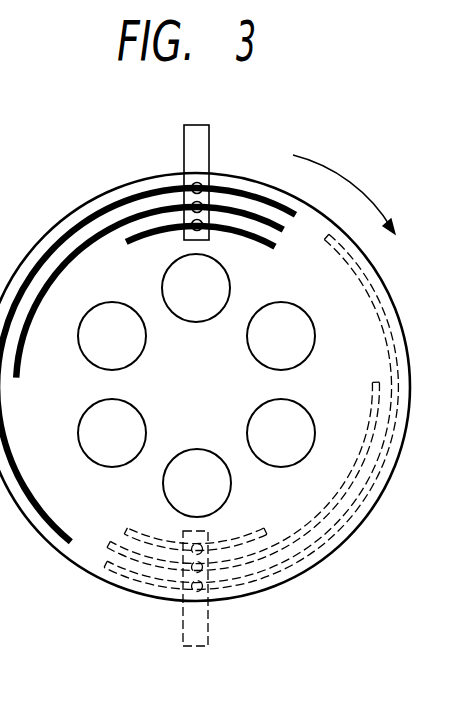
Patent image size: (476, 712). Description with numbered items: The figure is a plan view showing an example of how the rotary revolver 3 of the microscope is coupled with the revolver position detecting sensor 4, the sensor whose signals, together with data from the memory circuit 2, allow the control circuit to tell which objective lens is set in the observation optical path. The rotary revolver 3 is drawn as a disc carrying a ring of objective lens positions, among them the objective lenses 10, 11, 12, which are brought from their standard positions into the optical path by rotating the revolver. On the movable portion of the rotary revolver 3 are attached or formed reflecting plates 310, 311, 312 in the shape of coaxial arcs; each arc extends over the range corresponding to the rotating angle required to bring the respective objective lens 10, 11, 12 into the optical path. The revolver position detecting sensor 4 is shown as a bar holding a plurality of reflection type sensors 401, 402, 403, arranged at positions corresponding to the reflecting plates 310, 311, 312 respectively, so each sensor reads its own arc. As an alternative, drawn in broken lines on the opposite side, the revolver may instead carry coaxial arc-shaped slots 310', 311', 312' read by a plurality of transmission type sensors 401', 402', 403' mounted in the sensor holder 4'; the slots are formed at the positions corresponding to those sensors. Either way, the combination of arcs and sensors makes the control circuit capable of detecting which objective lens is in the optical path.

The memory circuit 2 is at (3, 162).
The rotary revolver 3 is at (355, 326).
The revolver position detecting sensor 4 is at (221, 166).
The objective lens 10 is at (208, 300).
The objective lens 11 is at (123, 353).
The objective lens 12 is at (123, 447).
The reflecting plate 310 is at (200, 265).
The reflecting plate 311 is at (167, 292).
The reflecting plate 312 is at (147, 338).
The reflection type sensor 401 is at (133, 188).
The reflection type sensor 402 is at (149, 166).
The reflection type sensor 403 is at (151, 139).
The contact bar in rotated position 4' is at (169, 590).
The slot 310' is at (179, 516).
The slot 311' is at (194, 491).
The slot 312' is at (220, 431).
The transmission type sensor 401' is at (250, 591).
The transmission type sensor 402' is at (241, 614).
The transmission type sensor 403' is at (225, 637).